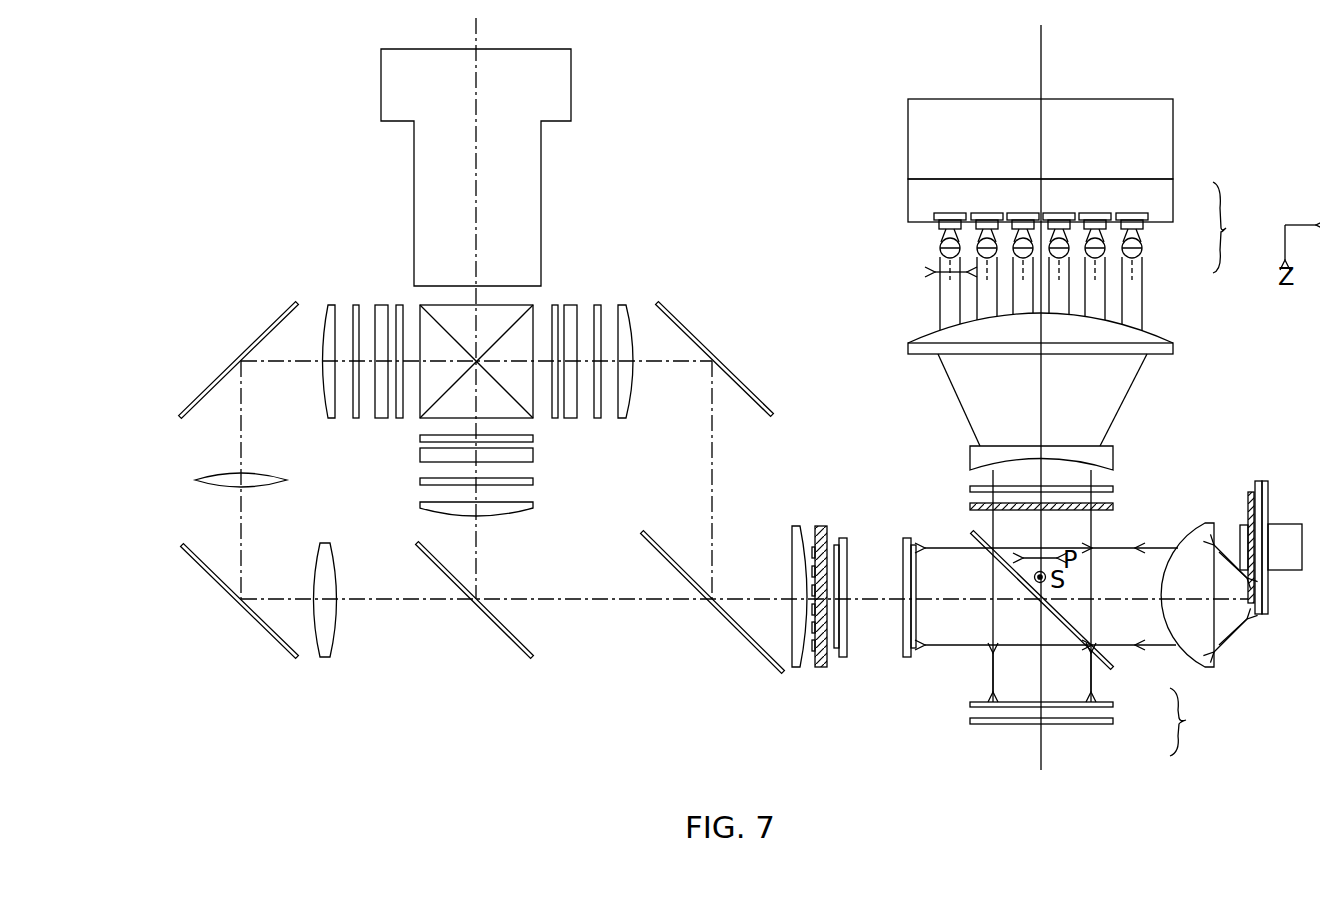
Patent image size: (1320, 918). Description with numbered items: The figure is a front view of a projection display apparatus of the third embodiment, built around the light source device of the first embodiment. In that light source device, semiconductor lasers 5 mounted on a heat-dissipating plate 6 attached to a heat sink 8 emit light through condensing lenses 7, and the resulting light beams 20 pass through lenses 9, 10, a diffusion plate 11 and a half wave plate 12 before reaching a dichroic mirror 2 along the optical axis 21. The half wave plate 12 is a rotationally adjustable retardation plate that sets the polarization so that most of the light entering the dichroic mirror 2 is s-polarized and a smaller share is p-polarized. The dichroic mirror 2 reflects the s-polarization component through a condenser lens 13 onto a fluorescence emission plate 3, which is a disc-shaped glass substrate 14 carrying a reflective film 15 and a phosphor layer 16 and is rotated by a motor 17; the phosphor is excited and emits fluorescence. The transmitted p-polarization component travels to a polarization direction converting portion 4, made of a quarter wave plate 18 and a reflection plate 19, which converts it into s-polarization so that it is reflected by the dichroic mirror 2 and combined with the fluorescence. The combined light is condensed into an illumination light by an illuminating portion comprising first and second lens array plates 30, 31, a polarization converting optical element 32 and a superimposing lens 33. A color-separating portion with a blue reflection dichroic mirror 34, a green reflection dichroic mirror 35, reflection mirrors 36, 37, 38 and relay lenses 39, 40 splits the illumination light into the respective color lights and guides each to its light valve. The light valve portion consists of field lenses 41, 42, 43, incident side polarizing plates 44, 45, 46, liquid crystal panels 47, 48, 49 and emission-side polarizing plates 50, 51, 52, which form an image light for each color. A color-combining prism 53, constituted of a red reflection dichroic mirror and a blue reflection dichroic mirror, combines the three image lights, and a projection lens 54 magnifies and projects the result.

The dichroic mirror 2 is at (1112, 660).
The fluorescence emission plate 3 is at (1271, 607).
The polarization direction converting portion 4 is at (1186, 722).
The semiconductor lasers 5 is at (1150, 224).
The heat-dissipating plate 6 is at (1173, 198).
The condensing lenses 7 is at (1143, 250).
The heat sink 8 is at (1173, 140).
The lens 9 is at (1173, 348).
The lens 10 is at (1113, 455).
The diffusion plate 11 is at (1113, 489).
The half wave plate 12 is at (1113, 507).
The condenser lens 13 is at (1210, 523).
The glass substrate 14 is at (1265, 614).
The reflective film 15 is at (1258, 614).
The phosphor layer 16 is at (1251, 603).
The motor 17 is at (1285, 570).
The quarter wave plate 18 is at (1113, 705).
The reflection plate 19 is at (1113, 721).
The light beams 20 is at (1142, 290).
The optical axis 21 is at (1041, 745).
The first lens array plate 30 is at (906, 657).
The second lens array plate 31 is at (843, 657).
The polarization converting optical element 32 is at (821, 667).
The superimposing lens 33 is at (797, 667).
The blue reflection dichroic mirror 34 is at (765, 660).
The green reflection dichroic mirror 35 is at (517, 654).
The reflection mirror 36 is at (672, 306).
The reflection mirror 37 is at (280, 652).
The reflection mirror 38 is at (282, 315).
The relay lens 39 is at (325, 657).
The relay lens 40 is at (195, 480).
The field lens 41 is at (520, 512).
The field lens 42 is at (626, 305).
The field lens 43 is at (328, 305).
The incident side polarizing plate 44 is at (533, 481).
The incident side polarizing plate 45 is at (597, 305).
The incident side polarizing plate 46 is at (356, 305).
The liquid crystal panel 47 is at (420, 455).
The liquid crystal panel 48 is at (570, 305).
The liquid crystal panel 49 is at (381, 305).
The emission-side polarizing plate 50 is at (533, 438).
The emission-side polarizing plate 51 is at (555, 305).
The emission-side polarizing plate 52 is at (399, 305).
The color-combining prism 53 is at (420, 408).
The projection lens 54 is at (571, 82).